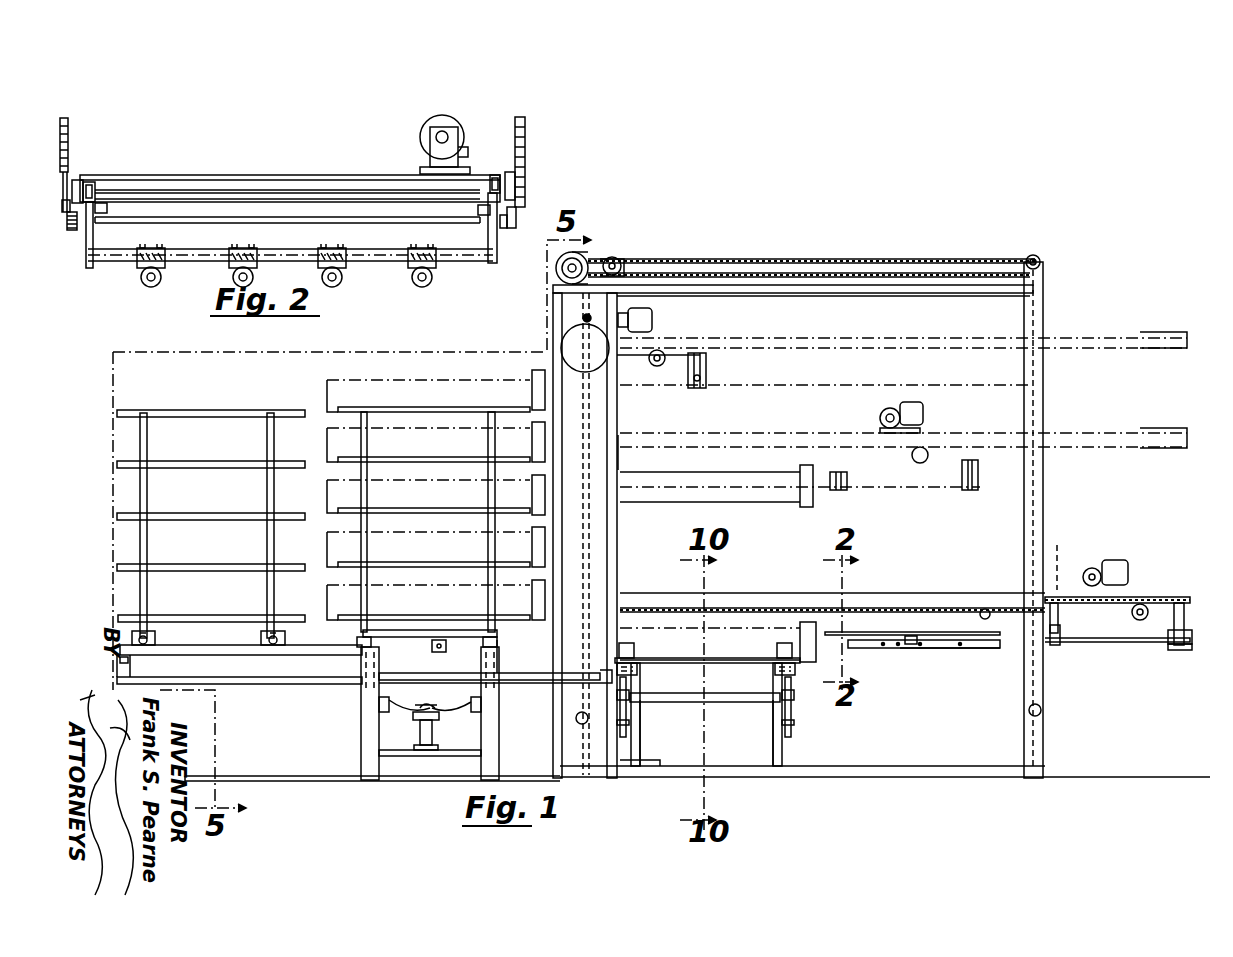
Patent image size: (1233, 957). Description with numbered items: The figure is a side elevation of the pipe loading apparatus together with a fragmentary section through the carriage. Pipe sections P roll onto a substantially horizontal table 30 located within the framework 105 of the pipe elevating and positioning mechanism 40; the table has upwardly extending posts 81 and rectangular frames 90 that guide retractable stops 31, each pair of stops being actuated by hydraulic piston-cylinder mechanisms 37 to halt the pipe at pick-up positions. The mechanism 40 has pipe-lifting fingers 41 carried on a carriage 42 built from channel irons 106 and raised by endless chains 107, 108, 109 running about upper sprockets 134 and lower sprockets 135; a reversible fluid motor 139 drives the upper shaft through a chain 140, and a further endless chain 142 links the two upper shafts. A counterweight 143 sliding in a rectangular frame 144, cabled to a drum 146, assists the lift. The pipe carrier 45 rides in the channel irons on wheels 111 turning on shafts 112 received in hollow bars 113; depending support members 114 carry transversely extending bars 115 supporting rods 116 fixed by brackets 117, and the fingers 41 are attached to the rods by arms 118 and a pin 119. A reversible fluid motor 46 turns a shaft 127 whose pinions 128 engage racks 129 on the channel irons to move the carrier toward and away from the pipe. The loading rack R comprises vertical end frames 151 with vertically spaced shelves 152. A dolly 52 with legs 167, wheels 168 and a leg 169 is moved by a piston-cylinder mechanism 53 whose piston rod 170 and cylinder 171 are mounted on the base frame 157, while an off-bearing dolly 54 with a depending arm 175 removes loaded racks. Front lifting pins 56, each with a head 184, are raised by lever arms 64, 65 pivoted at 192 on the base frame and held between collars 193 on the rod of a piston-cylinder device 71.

In FIG. 1, the table 30 is at (726, 701).
In FIG. 1, the retractable stops 31 is at (675, 658).
In FIG. 1, the hydraulic piston-cylinder mechanisms 37 is at (640, 718).
In FIG. 1, the pipe elevating and positioning mechanism 40 is at (855, 487).
In FIG. 1, the pipe-lifting fingers 41 is at (878, 608).
In FIG. 1, the carriage 42 is at (832, 570).
In FIG. 2, the pipe carrier 45 is at (290, 177).
In FIG. 1, the pipe carrier 45 is at (720, 372).
In FIG. 2, the reversible fluid motor 46 is at (428, 127).
In FIG. 1, the reversible fluid motor 46 is at (655, 310).
In FIG. 1, the dolly 52 is at (183, 640).
In FIG. 1, the piston-cylinder mechanism 53 is at (548, 685).
In FIG. 1, the off-bearing dolly 54 is at (420, 630).
In FIG. 1, the front rack lifting pins 56 is at (520, 668).
In FIG. 1, the lever arm 64 is at (415, 712).
In FIG. 1, the lever arm 65 is at (450, 712).
In FIG. 1, the piston-cylinder device 71 is at (425, 750).
In FIG. 1, the posts 81 is at (642, 748).
In FIG. 1, the rectangular frames 90 is at (640, 676).
In FIG. 1, the framework 105 is at (1043, 412).
In FIG. 2, the channel irons 106 is at (77, 180).
In FIG. 1, the channel irons 106 is at (788, 593).
In FIG. 2, the endless chain 107 is at (525, 125).
In FIG. 1, the endless chain 107 is at (607, 320).
In FIG. 1, the endless chain 108 is at (1043, 305).
In FIG. 2, the endless chain 109 is at (68, 126).
In FIG. 2, the rollers or wheels 111 is at (89, 182).
In FIG. 1, the rollers or wheels 111 is at (1182, 603).
In FIG. 2, the shafts 112 is at (213, 175).
In FIG. 2, the hollow bars 113 is at (104, 215).
In FIG. 1, the hollow bars 113 is at (1117, 569).
In FIG. 2, the depending support members 114 is at (95, 252).
In FIG. 1, the depending support members 114 is at (1192, 640).
In FIG. 2, the transversely extending bar 115 is at (283, 249).
In FIG. 1, the rods 116 is at (665, 366).
In FIG. 2, the brackets 117 is at (183, 252).
In FIG. 1, the brackets 117 is at (1058, 640).
In FIG. 2, the arms 118 is at (163, 284).
In FIG. 1, the arms 118 is at (912, 648).
In FIG. 2, the pin 119 is at (297, 275).
In FIG. 1, the pin 119 is at (905, 650).
In FIG. 2, the shaft 127 is at (365, 223).
In FIG. 2, the pinions 128 is at (74, 230).
In FIG. 1, the pinions 128 is at (1140, 620).
In FIG. 2, the racks 129 is at (62, 212).
In FIG. 1, the racks 129 is at (983, 608).
In FIG. 1, the upper sprockets 134 is at (1040, 258).
In FIG. 1, the lower sprockets 135 is at (588, 725).
In FIG. 1, the reversible fluid motor 139 is at (622, 262).
In FIG. 1, the chain 140 is at (585, 254).
In FIG. 1, the endless chain 142 is at (895, 259).
In FIG. 1, the counterweight 143 is at (595, 368).
In FIG. 1, the rectangular frame 144 is at (600, 520).
In FIG. 1, the drum 146 is at (555, 293).
In FIG. 1, the vertical end frames 151 is at (135, 410).
In FIG. 1, the shelves 152 is at (228, 410).
In FIG. 1, the base frame 157 is at (361, 770).
In FIG. 1, the legs 167 is at (135, 631).
In FIG. 1, the wheels 168 is at (150, 631).
In FIG. 1, the leg 169 is at (140, 669).
In FIG. 1, the piston rod 170 is at (238, 690).
In FIG. 1, the cylinder 171 is at (540, 690).
In FIG. 1, the depending arm 175 is at (432, 640).
In FIG. 1, the head 184 is at (357, 640).
In FIG. 1, the pivot 192 is at (379, 704).
In FIG. 1, the collars 193 is at (395, 715).
In FIG. 1, the pipe sections P is at (735, 512).
In FIG. 1, the loading rack R is at (307, 491).